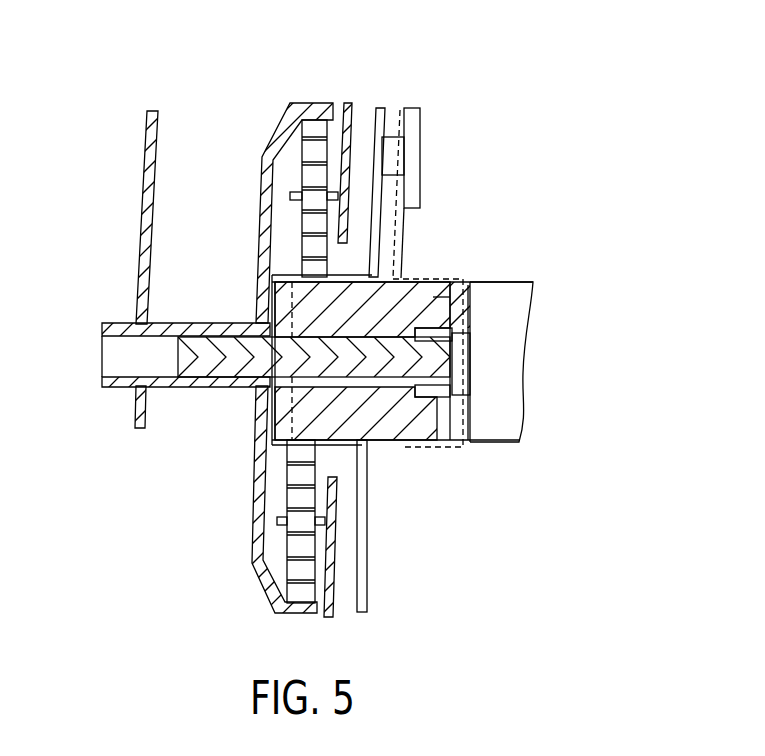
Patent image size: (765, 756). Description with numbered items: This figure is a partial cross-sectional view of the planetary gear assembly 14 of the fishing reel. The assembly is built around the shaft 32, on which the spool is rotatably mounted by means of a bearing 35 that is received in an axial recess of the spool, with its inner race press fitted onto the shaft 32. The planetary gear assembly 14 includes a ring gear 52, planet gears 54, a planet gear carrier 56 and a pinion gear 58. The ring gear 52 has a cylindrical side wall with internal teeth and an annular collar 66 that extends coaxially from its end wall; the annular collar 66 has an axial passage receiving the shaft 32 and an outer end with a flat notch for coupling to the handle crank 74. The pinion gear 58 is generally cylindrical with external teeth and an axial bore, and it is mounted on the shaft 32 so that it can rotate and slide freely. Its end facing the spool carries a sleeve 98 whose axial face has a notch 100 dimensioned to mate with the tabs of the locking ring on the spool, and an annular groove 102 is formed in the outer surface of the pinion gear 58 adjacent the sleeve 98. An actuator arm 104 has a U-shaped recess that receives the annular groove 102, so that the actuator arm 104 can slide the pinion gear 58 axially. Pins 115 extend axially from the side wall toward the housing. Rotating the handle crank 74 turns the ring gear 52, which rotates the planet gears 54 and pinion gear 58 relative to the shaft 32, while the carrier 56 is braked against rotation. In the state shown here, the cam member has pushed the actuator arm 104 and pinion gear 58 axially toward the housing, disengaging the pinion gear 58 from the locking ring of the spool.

The planetary gear assembly 14 is at (382, 378).
The shaft 32 is at (270, 372).
The bearing 35 is at (468, 358).
The ring gear 52 is at (282, 97).
The planet gears 54 is at (312, 152).
The planet gear carrier 56 is at (347, 101).
The pinion gear 58 is at (392, 307).
The annular collar 66 is at (177, 326).
The handle crank 74 is at (150, 147).
The sleeve 98 is at (436, 297).
The notch 100 is at (433, 333).
The annular groove 102 is at (373, 442).
The actuator arm 104 is at (384, 96).
The pins 115 is at (392, 155).